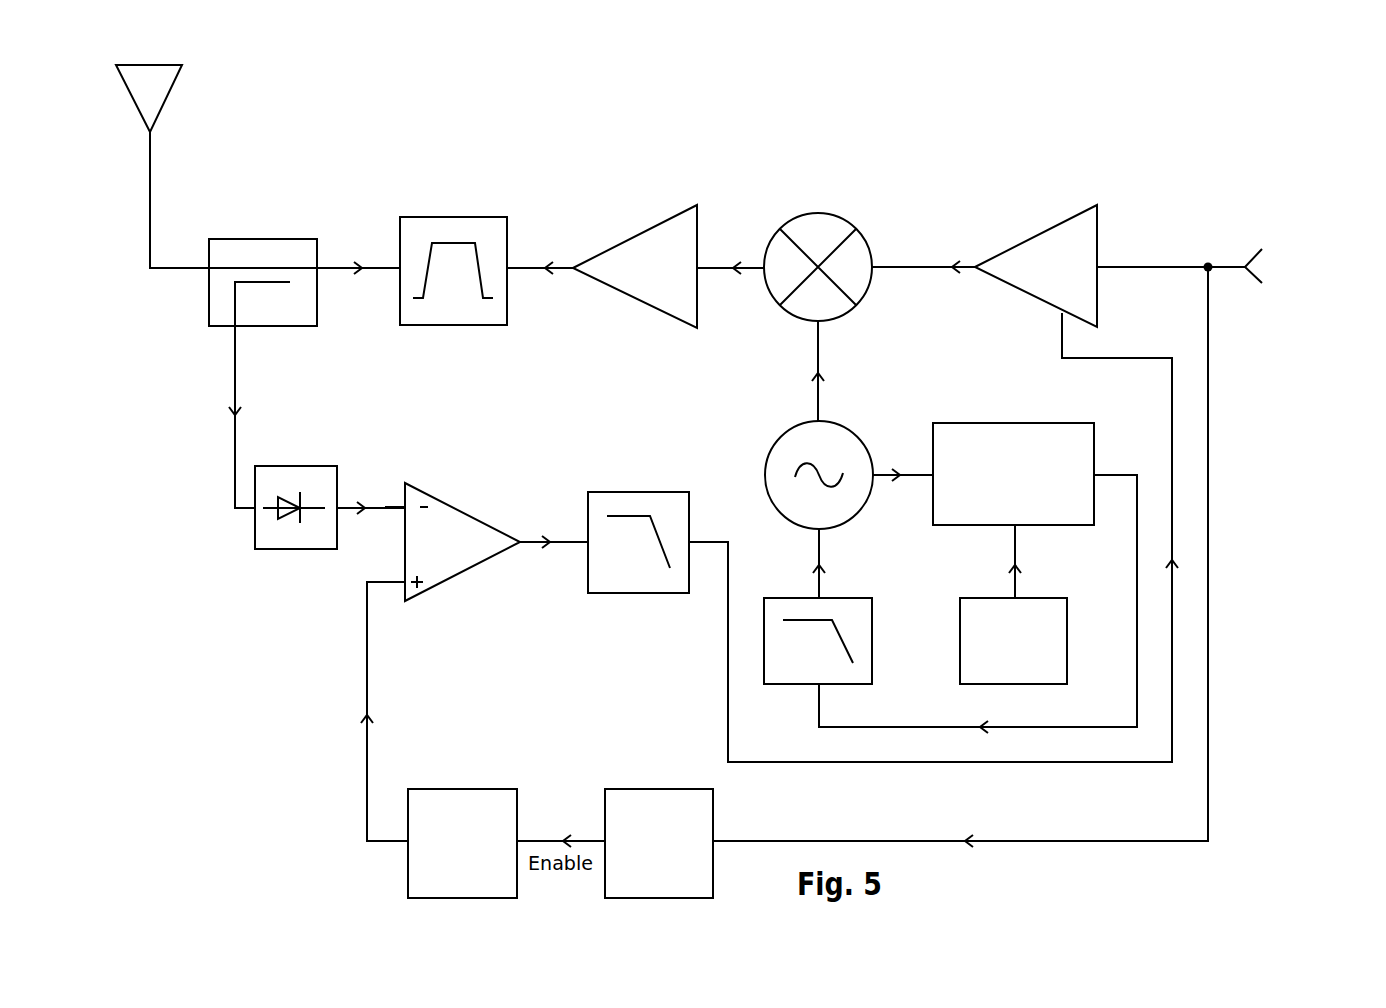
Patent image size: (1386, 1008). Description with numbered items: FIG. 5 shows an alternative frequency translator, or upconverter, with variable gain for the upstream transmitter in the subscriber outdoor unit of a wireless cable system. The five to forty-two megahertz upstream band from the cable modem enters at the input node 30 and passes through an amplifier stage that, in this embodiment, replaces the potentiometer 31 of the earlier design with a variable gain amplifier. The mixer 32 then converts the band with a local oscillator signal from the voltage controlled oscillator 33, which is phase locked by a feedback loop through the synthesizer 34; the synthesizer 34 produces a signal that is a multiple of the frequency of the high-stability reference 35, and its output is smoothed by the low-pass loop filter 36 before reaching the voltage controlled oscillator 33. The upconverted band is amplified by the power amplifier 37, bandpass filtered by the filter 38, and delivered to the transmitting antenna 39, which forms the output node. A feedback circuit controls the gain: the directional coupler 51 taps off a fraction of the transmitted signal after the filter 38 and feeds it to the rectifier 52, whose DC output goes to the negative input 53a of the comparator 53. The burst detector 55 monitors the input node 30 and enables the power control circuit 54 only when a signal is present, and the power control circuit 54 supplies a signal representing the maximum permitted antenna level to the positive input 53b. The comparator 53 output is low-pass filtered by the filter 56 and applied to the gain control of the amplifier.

The input node 30 is at (1143, 266).
The potentiometer 31 is at (1090, 206).
The mixer 32 is at (817, 213).
The voltage controlled oscillator 33 is at (838, 421).
The synthesizer 34 is at (1043, 423).
The high-stability reference 35 is at (1040, 598).
The low-pass loop filter 36 is at (836, 598).
The power amplifier 37 is at (683, 207).
The bandpass filter 38 is at (485, 217).
The transmitting antenna 39 is at (176, 72).
The directional coupler 51 is at (290, 239).
The rectifier 52 is at (312, 466).
The comparator 53 is at (466, 513).
The negative input of comparator 53a is at (393, 492).
The positive input of comparator 53b is at (393, 592).
The power control circuit 54 is at (480, 789).
The burst detector 55 is at (638, 789).
The low-pass filter 56 is at (655, 492).